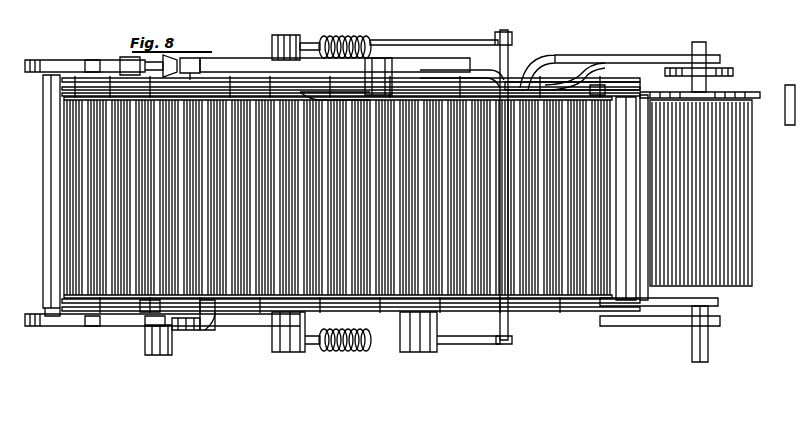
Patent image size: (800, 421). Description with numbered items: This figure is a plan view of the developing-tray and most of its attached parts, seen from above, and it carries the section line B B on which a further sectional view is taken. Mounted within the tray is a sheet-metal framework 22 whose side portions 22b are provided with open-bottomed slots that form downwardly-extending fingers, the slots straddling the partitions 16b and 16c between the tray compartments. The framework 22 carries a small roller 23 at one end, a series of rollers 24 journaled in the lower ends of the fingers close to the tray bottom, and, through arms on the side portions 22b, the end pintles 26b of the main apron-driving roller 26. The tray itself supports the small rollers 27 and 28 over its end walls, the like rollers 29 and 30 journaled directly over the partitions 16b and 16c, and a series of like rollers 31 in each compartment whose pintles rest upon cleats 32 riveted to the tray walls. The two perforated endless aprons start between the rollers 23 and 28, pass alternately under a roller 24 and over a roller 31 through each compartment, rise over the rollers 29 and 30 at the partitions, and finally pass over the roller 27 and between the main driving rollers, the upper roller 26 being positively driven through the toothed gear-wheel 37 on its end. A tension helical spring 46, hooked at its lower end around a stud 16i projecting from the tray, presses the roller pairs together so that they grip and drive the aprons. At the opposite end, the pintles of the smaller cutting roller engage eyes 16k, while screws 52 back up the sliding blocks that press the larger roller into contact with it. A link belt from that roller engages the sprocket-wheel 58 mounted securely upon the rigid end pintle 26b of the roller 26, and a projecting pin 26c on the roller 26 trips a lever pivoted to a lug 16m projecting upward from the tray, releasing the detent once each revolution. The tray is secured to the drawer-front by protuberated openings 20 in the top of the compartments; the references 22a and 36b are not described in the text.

The partition 16b is at (208, 332).
The partition 16c is at (722, 321).
The stud 16i is at (285, 35).
The eyes 16k is at (225, 55).
The lug 16m is at (420, 70).
The protuberated opening 20 is at (162, 352).
The sheet-metal framework 22 is at (660, 58).
The bar 22a is at (720, 302).
The side portions 22b is at (60, 88).
The small roller 23 is at (70, 120).
The rollers 24 is at (170, 140).
The main apron-driving roller 26 is at (735, 198).
The end pintles 26b is at (705, 88).
The projecting pin 26c is at (640, 65).
The small roller 27 is at (640, 290).
The small roller 28 is at (50, 222).
The roller 29 is at (195, 115).
The roller 30 is at (370, 90).
The rollers 31 is at (580, 270).
The cleats 32 is at (88, 62).
The post 36b is at (710, 345).
The toothed gear-wheel 37 is at (150, 185).
The tension helical spring 46 is at (503, 32).
The screws 52 is at (180, 328).
The sprocket-wheel 58 is at (710, 68).
The section line B is at (530, 35).